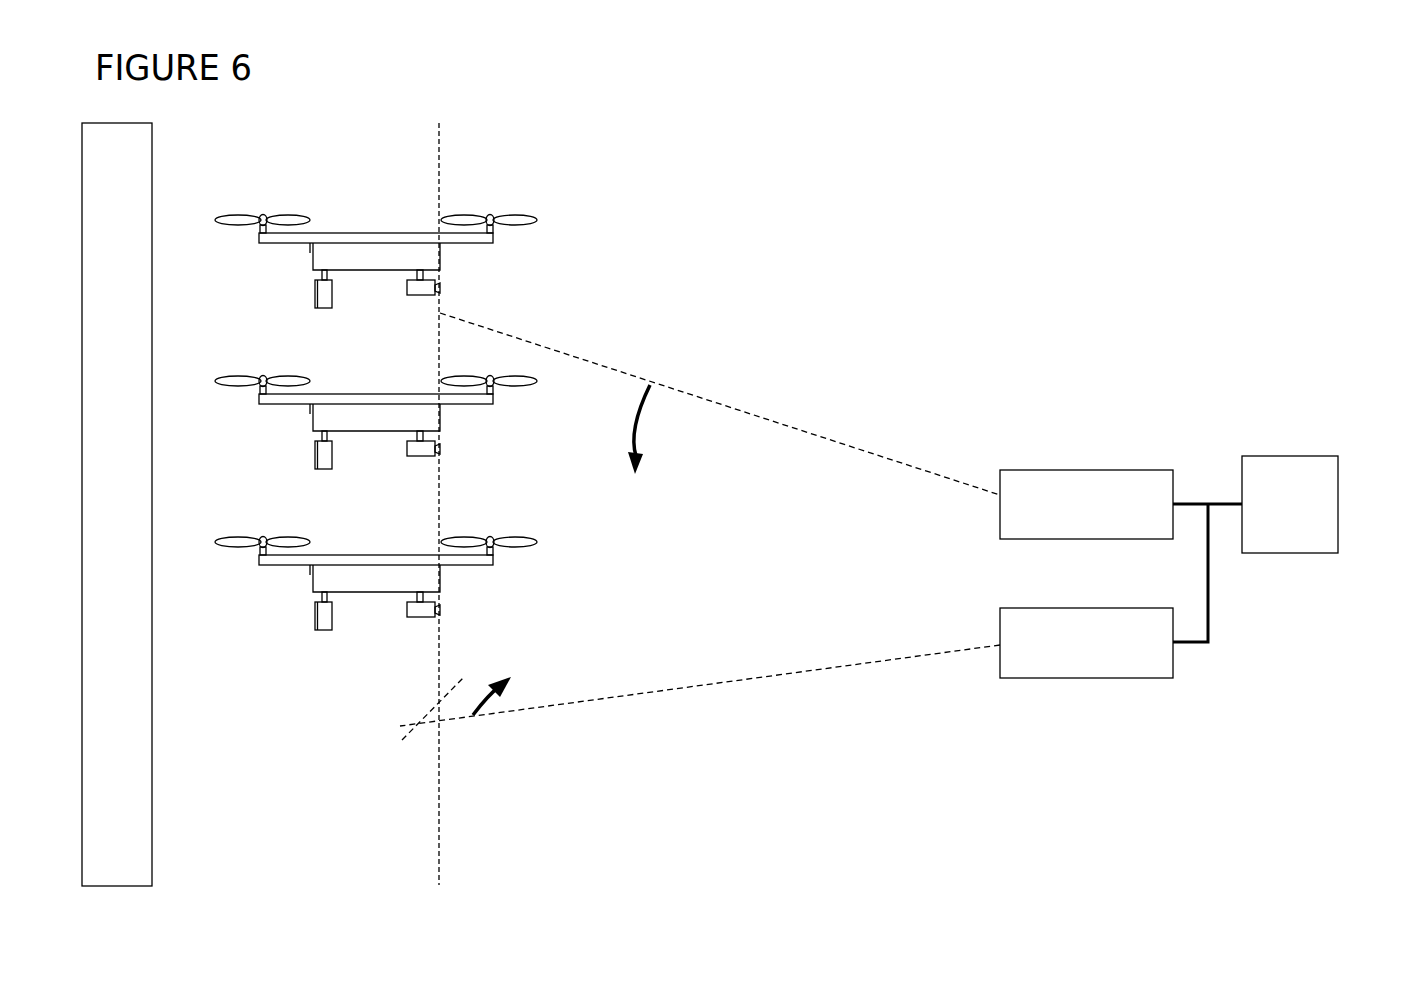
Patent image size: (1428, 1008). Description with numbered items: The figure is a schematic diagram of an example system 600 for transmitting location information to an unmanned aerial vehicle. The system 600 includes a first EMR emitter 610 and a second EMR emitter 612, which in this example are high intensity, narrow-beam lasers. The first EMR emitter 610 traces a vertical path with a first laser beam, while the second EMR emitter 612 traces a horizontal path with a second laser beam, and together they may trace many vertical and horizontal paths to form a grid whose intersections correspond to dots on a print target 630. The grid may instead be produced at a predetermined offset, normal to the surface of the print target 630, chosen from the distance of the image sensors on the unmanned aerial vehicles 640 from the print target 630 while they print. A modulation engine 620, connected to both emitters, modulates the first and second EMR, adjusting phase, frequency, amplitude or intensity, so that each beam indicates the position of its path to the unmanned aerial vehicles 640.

The system 600 is at (1205, 502).
The first EMR emitter 610 is at (1063, 518).
The second EMR emitter 612 is at (1063, 656).
The modulation engine 620 is at (1266, 518).
The print target 630 is at (93, 516).
The unmanned aerial vehicles 640 is at (558, 306).